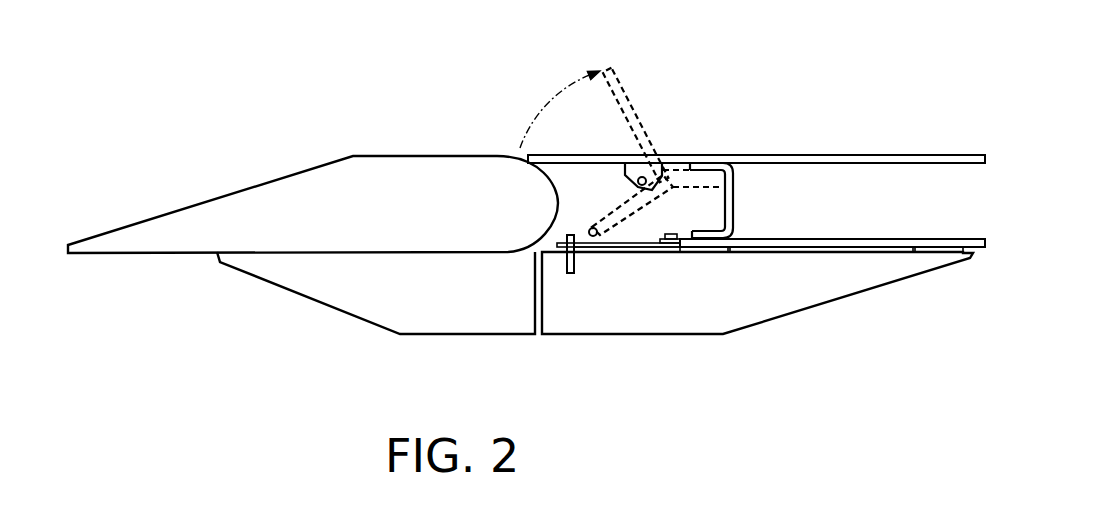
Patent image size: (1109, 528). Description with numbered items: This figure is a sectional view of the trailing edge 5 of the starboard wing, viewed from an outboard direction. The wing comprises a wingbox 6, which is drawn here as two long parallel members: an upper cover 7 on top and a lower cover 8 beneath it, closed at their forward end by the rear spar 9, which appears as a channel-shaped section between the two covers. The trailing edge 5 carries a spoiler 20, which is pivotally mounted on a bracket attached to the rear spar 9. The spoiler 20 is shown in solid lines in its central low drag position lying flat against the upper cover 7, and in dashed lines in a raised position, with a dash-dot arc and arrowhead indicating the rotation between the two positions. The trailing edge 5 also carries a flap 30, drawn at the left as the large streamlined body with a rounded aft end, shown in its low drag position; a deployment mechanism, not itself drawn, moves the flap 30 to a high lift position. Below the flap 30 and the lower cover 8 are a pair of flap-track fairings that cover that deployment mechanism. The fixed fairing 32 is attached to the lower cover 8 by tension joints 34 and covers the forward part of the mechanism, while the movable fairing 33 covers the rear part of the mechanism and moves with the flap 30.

The trailing edge 5 is at (313, 148).
The wingbox 6 is at (756, 98).
The upper cover 7 is at (777, 157).
The lower cover 8 is at (843, 242).
The rear spar 9 is at (753, 200).
The spoiler 20 is at (627, 97).
The flap 30 is at (258, 210).
The fixed fairing 32 is at (637, 318).
The movable fairing 33 is at (467, 295).
The tension joints 34 is at (707, 253).